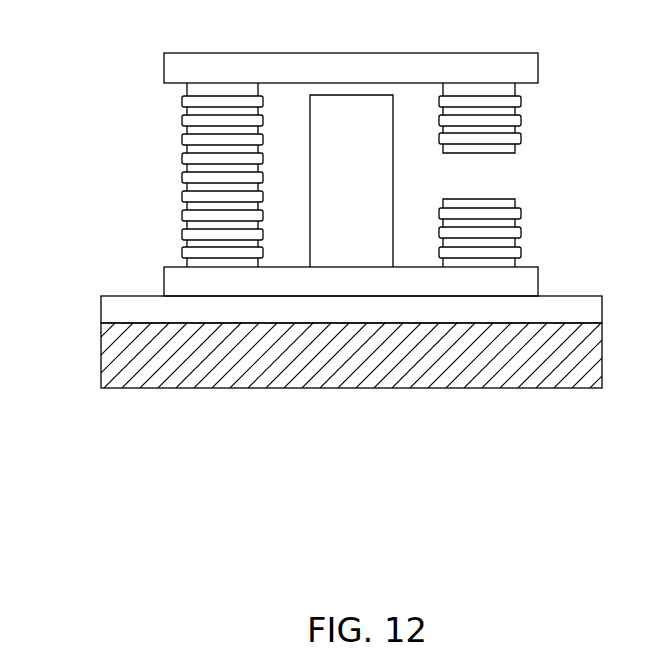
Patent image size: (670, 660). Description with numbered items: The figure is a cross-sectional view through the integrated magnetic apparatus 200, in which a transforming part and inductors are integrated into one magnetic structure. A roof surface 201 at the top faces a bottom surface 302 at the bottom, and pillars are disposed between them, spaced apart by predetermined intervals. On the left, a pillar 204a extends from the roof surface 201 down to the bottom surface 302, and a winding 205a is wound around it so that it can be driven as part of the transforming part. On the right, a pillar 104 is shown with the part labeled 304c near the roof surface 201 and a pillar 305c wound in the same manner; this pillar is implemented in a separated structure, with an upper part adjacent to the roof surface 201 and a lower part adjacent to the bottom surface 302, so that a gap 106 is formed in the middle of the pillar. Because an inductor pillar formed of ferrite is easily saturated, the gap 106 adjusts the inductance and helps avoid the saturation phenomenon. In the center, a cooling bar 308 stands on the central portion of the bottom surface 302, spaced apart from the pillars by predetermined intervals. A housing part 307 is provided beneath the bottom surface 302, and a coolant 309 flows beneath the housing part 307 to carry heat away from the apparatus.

The electrode structure assembly 200 is at (86, 50).
The roof surface 201 is at (532, 65).
The pillar 204a is at (190, 88).
The winding 205a is at (186, 103).
The first layer of right electrode stack 304c is at (513, 90).
The pillar 305c is at (513, 100).
The pillar 104 is at (528, 164).
The gap 106 is at (503, 174).
The cooling bar 308 is at (355, 110).
The bottom surface 302 is at (530, 278).
The housing part 307 is at (590, 308).
The coolant 309 is at (590, 352).